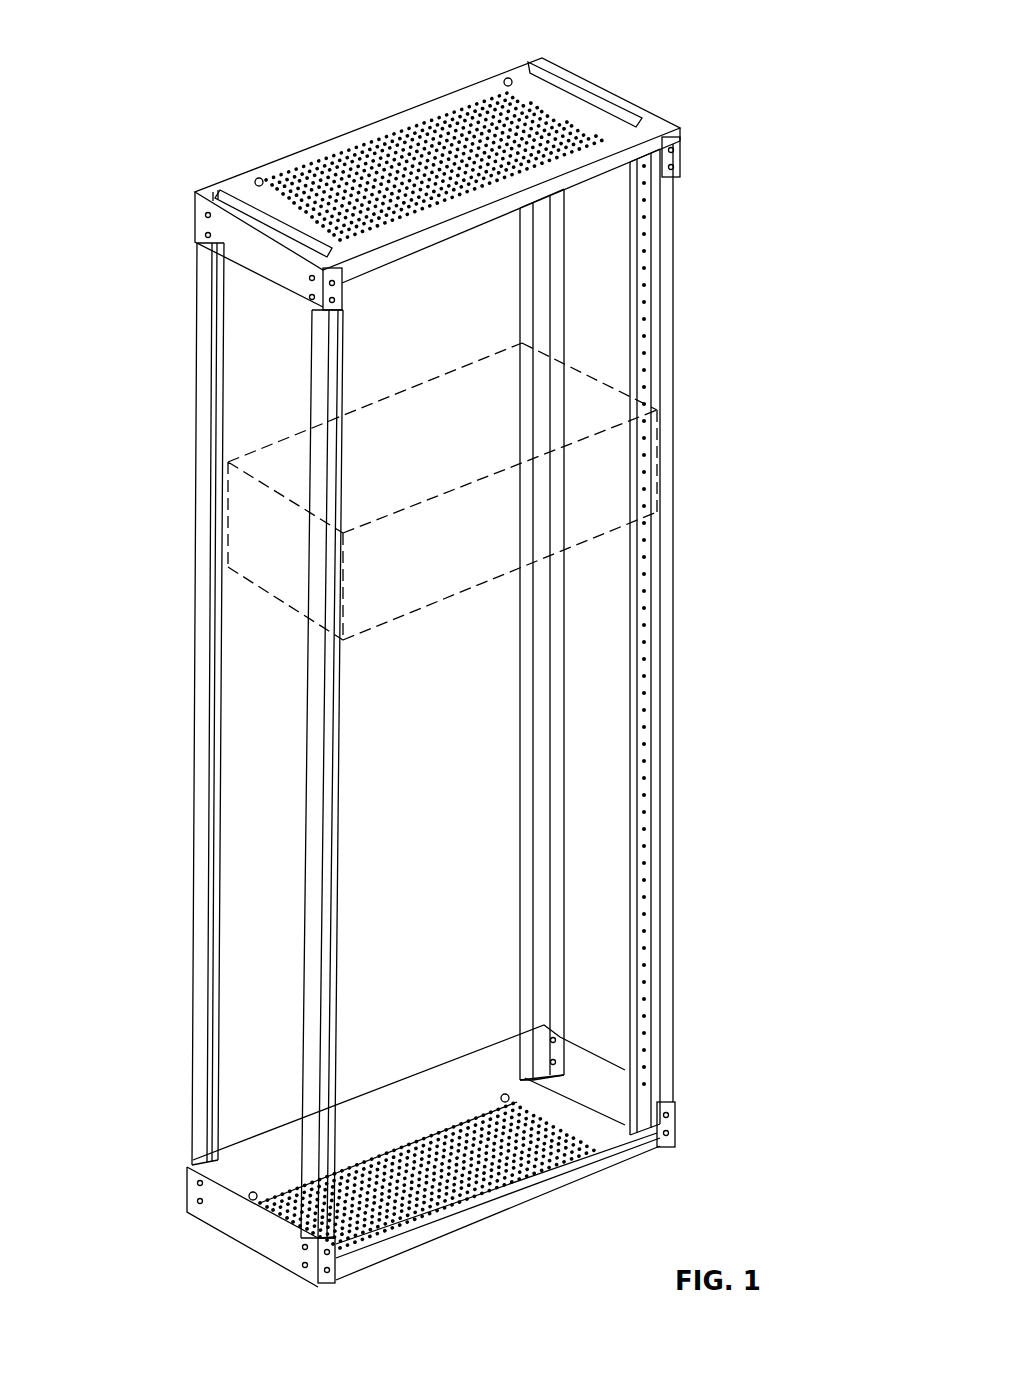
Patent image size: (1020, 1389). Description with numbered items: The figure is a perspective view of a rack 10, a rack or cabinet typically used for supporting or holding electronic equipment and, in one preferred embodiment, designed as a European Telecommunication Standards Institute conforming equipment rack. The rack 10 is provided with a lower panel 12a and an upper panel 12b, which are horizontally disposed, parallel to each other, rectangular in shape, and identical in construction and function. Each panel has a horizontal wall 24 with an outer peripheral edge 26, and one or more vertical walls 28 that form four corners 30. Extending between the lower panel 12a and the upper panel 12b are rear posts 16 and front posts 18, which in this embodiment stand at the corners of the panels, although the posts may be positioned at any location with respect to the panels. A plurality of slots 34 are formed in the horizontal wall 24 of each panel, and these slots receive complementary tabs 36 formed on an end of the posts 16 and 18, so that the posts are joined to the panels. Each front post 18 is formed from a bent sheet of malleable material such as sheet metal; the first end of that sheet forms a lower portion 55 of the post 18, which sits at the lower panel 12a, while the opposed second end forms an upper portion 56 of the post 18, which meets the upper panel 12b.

The rack 10 is at (724, 296).
The lower panel 12a is at (677, 1137).
The upper panel 12b is at (663, 118).
The rear posts 16 is at (558, 690).
The front posts 18 is at (672, 745).
The horizontal wall 24 is at (345, 137).
The outer peripheral edge 26 is at (604, 86).
The vertical walls 28 is at (262, 283).
The corners 30 is at (547, 58).
The slots 34 is at (228, 183).
The tabs 36 is at (228, 190).
The lower portion 55 is at (673, 1088).
The upper portion 56 is at (677, 187).